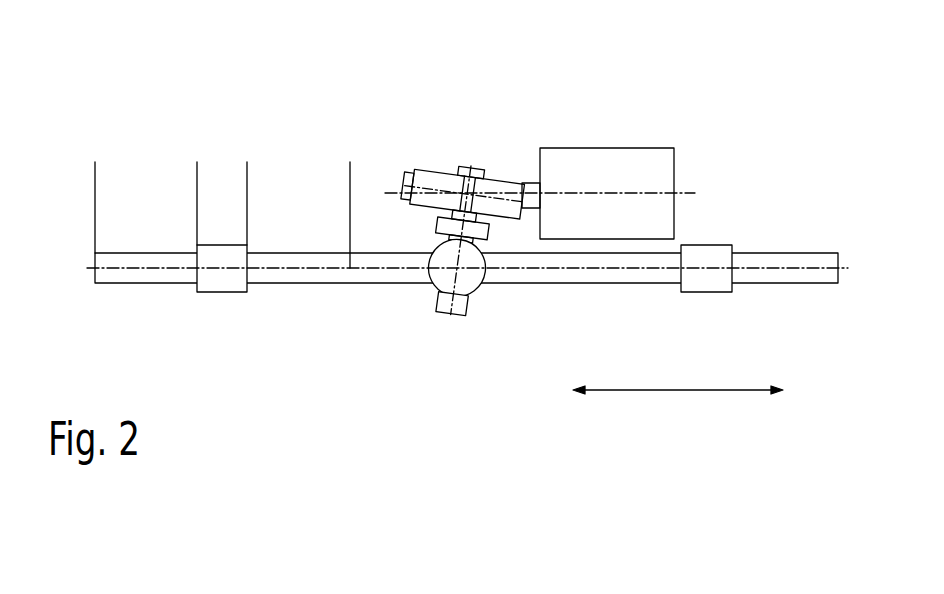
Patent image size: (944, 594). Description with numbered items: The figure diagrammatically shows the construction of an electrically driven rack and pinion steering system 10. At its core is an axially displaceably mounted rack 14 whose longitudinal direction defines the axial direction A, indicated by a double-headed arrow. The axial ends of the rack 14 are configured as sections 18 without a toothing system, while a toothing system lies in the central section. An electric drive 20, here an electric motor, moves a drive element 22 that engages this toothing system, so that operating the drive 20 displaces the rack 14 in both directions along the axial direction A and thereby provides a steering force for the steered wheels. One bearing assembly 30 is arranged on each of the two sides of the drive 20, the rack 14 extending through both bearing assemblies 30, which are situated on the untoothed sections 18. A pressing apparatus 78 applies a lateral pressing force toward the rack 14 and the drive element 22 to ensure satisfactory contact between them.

The rack and pinion steering system 10 is at (176, 78).
The rack 14 is at (372, 298).
The sections without a toothing system 18 is at (172, 275).
The electric drive 20 is at (598, 167).
The drive element 22 is at (424, 153).
The bearing assembly 30 is at (217, 278).
The pressing apparatus 78 is at (475, 285).
The axial direction A is at (678, 390).